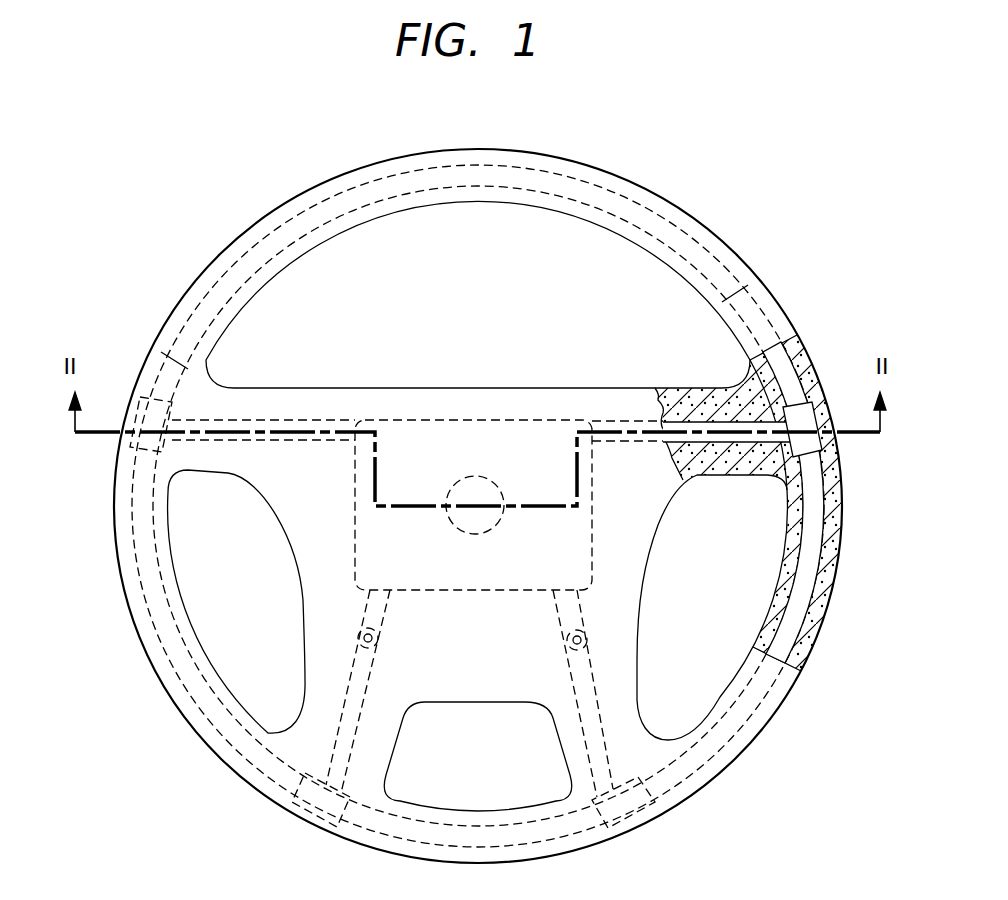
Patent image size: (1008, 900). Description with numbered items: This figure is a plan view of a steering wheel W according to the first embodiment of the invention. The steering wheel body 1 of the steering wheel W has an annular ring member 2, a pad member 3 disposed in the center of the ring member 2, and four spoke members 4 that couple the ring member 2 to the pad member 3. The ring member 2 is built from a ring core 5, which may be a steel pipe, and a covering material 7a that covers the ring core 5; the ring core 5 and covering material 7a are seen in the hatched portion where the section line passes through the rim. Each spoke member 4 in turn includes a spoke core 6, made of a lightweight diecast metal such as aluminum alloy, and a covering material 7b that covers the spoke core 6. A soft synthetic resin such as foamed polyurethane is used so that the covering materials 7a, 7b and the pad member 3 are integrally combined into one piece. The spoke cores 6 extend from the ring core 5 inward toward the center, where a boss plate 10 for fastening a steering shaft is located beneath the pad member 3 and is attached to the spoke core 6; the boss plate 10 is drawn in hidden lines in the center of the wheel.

The steering wheel W is at (690, 157).
The steering wheel body 1 is at (726, 238).
The annular ring member 2 is at (898, 583).
The pad member 3 is at (534, 388).
The spoke member 4 is at (232, 476).
The ring core 5 is at (806, 588).
The spoke core 6 is at (244, 418).
The covering material 7a is at (814, 630).
The covering material 7b is at (753, 467).
The boss plate 10 is at (427, 420).